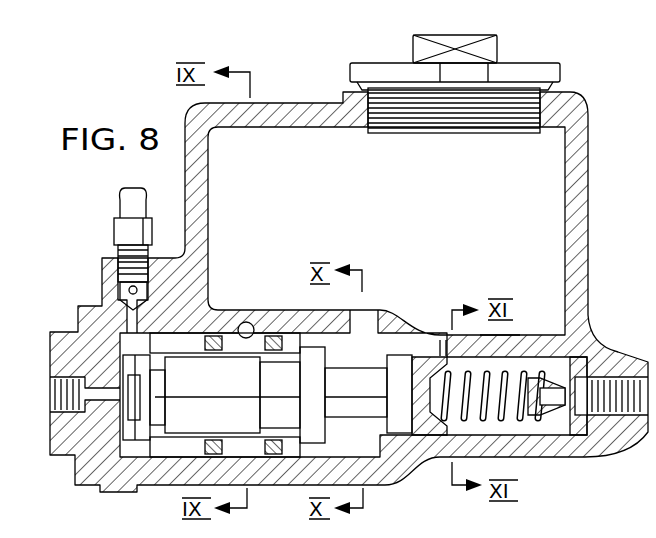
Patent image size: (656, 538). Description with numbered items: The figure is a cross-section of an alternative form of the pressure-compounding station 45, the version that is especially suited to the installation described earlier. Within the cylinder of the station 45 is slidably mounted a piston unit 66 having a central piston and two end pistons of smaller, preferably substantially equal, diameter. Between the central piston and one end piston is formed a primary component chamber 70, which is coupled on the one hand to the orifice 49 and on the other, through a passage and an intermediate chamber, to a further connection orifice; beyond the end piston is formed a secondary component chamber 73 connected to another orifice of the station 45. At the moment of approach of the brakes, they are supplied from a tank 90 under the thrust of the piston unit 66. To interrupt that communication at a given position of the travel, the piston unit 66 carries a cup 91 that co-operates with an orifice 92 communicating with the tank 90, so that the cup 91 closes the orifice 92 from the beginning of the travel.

The station 45 is at (590, 185).
The orifice 49 is at (45, 396).
The piston unit 66 is at (292, 455).
The primary component chamber 70 is at (135, 432).
The secondary component chamber 73 is at (250, 322).
The tank 90 is at (388, 201).
The cup 91 is at (442, 355).
The orifice 92 is at (498, 334).